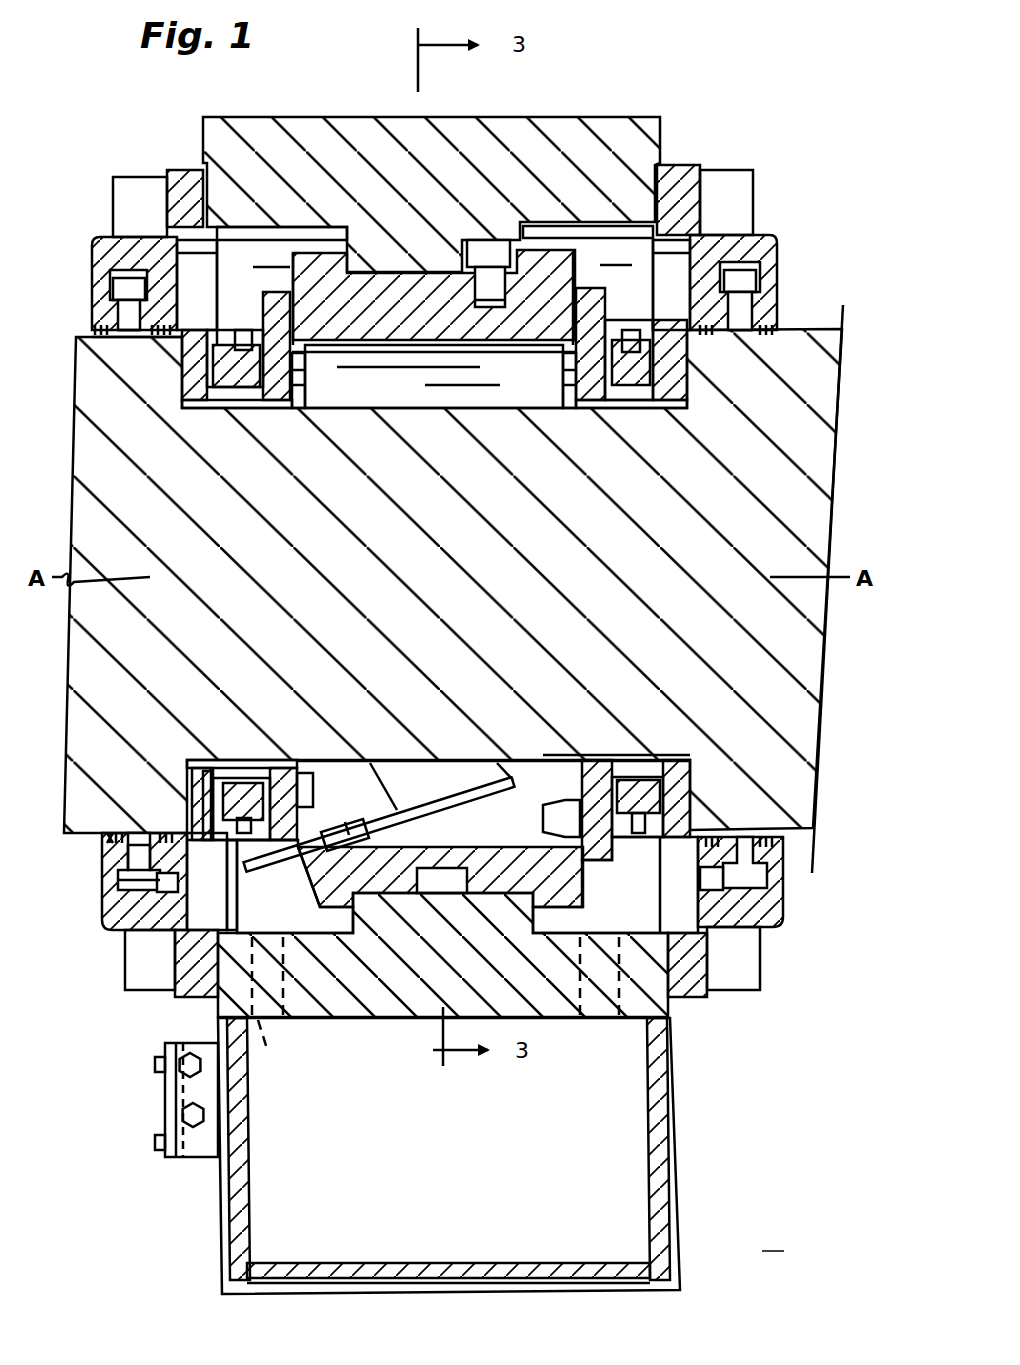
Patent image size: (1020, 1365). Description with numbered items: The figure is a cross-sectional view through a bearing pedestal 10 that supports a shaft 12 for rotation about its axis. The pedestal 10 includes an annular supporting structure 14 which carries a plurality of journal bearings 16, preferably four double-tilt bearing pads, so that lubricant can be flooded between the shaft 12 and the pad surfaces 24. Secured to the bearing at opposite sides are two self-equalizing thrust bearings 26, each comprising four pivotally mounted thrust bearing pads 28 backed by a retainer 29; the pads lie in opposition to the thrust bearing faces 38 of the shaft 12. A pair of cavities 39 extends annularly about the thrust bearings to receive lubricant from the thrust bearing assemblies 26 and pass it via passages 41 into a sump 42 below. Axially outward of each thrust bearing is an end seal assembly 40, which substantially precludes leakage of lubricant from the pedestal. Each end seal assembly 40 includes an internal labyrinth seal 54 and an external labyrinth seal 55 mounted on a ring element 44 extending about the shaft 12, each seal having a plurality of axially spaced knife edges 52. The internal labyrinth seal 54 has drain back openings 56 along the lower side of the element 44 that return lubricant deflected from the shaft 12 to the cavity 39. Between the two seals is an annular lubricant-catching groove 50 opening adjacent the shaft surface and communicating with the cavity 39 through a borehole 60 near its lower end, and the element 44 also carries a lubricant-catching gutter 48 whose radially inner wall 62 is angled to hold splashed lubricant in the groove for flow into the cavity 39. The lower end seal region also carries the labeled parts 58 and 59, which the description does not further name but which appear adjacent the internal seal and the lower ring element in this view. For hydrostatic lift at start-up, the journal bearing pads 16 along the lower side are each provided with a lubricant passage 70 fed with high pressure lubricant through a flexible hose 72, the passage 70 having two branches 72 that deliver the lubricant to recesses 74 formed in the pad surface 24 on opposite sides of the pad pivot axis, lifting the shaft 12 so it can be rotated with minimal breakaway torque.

The bearing pedestal 10 is at (758, 150).
The shaft 12 is at (808, 682).
The annular supporting structure 14 is at (320, 1008).
The journal bearings 16 is at (523, 828).
The pad surfaces 24 is at (470, 760).
The self-equalizing thrust bearings 26 is at (186, 768).
The thrust bearing pads 28 is at (690, 380).
The retainer 29 is at (282, 385).
The thrust bearing faces 38 is at (186, 818).
The cavities 39 is at (442, 962).
The end seal assembly 40 is at (92, 183).
The passages 41 is at (279, 1045).
The sump 42 is at (427, 1193).
The ring element 44 is at (780, 268).
The lubricant-catching gutter 48 is at (182, 280).
The lubricant-catching groove 50 is at (120, 307).
The knife edges 52 is at (104, 850).
The internal labyrinth seal 54 is at (152, 340).
The external labyrinth seal 55 is at (100, 328).
The drain back openings 56 is at (207, 881).
The threads 58 is at (112, 832).
The washer 59 is at (99, 900).
The borehole 60 is at (178, 905).
The angled inner wall 62 is at (182, 288).
The lubricant passage 70 is at (443, 795).
The flexible hose / branch passages 72 is at (380, 790).
The recesses 74 is at (515, 762).